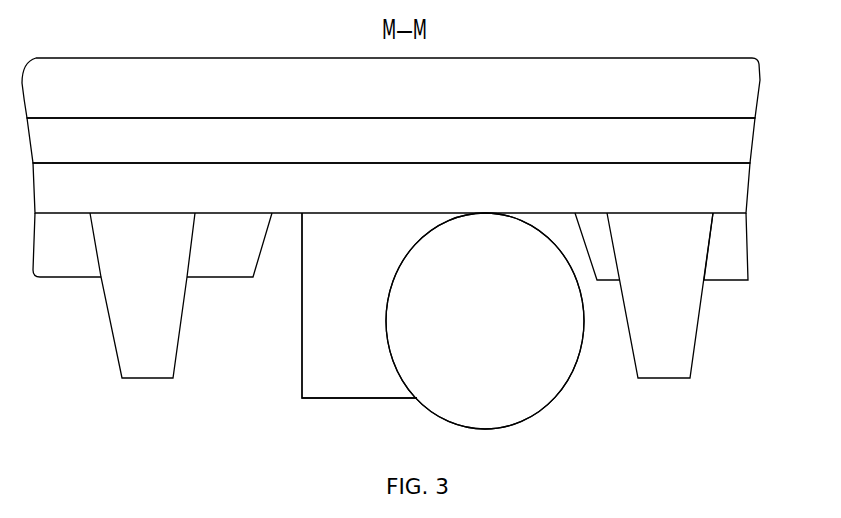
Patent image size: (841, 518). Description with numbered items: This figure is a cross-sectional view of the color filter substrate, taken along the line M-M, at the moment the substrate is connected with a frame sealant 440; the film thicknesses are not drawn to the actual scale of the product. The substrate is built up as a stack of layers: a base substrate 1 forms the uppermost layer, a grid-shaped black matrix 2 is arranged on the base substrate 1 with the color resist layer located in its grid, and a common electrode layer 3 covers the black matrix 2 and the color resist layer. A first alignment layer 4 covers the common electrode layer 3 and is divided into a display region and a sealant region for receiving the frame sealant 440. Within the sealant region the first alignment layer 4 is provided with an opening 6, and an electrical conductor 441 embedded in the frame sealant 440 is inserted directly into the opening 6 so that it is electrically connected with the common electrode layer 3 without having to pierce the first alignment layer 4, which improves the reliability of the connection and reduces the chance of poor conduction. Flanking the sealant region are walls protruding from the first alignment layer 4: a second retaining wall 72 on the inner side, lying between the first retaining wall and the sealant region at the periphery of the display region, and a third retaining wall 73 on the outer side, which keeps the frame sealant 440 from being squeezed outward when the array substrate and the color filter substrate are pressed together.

The base substrate 1 is at (745, 88).
The black matrix 2 is at (738, 143).
The common electrode layer 3 is at (728, 192).
The first alignment layer 4 is at (738, 255).
The opening 6 is at (289, 250).
The second retaining wall 72 is at (678, 348).
The third retaining wall 73 is at (167, 355).
The frame sealant 440 is at (345, 388).
The electrical conductor 441 is at (548, 381).